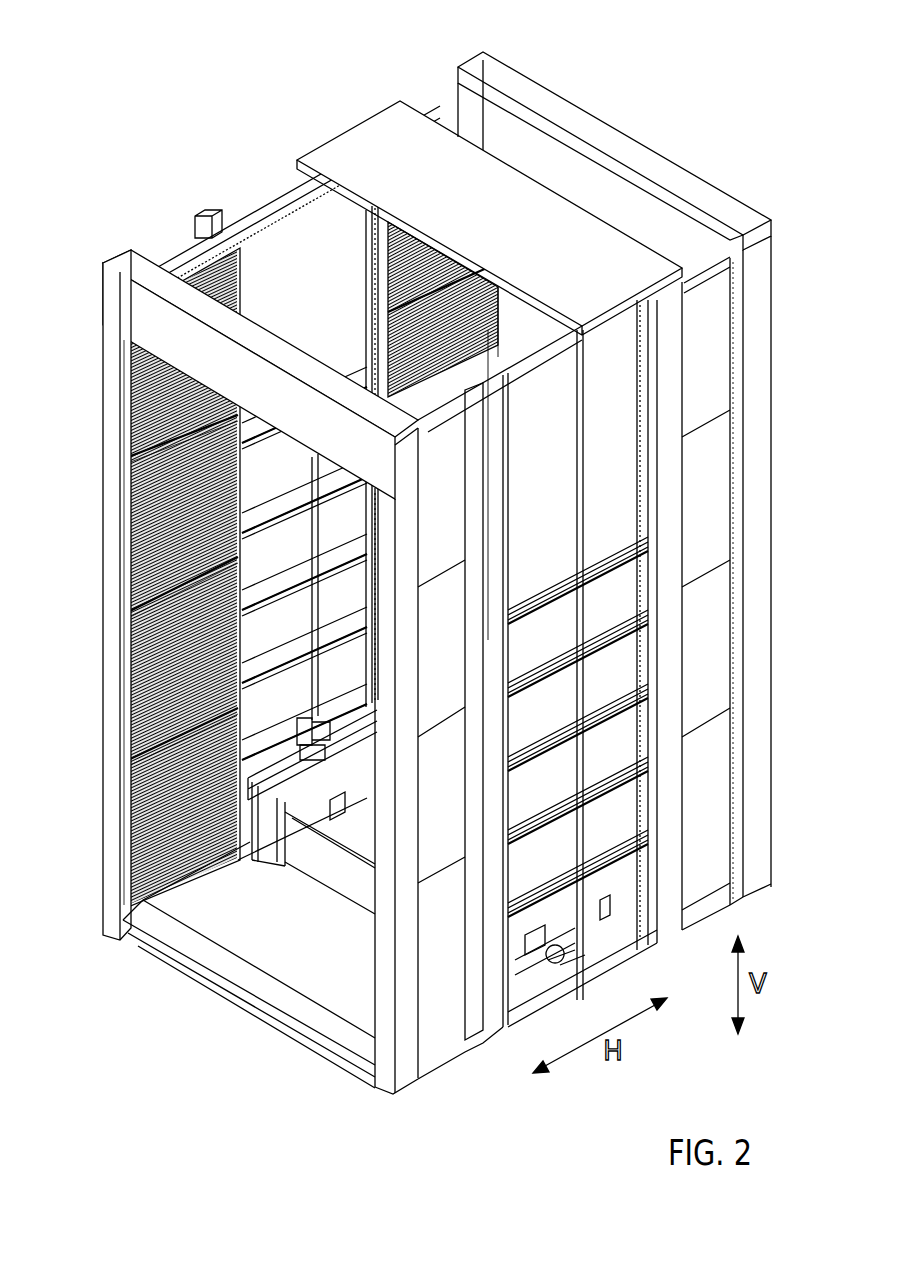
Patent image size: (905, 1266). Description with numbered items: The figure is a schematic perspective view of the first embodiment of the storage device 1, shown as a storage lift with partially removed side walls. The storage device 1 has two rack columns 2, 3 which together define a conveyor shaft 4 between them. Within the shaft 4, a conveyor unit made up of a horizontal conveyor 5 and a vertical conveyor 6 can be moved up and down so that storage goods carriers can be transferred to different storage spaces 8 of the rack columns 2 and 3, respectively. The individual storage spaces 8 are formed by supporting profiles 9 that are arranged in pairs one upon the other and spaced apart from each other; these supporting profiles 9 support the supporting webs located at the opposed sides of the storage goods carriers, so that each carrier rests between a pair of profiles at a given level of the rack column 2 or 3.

The storage device 1 is at (575, 84).
The rack column 2 is at (153, 242).
The rack column 3 is at (430, 84).
The conveyor shaft 4 is at (304, 300).
The horizontal conveyor 5 is at (287, 783).
The vertical conveyor 6 is at (327, 852).
The storage space 8 is at (127, 383).
The supporting profile 9 is at (127, 374).